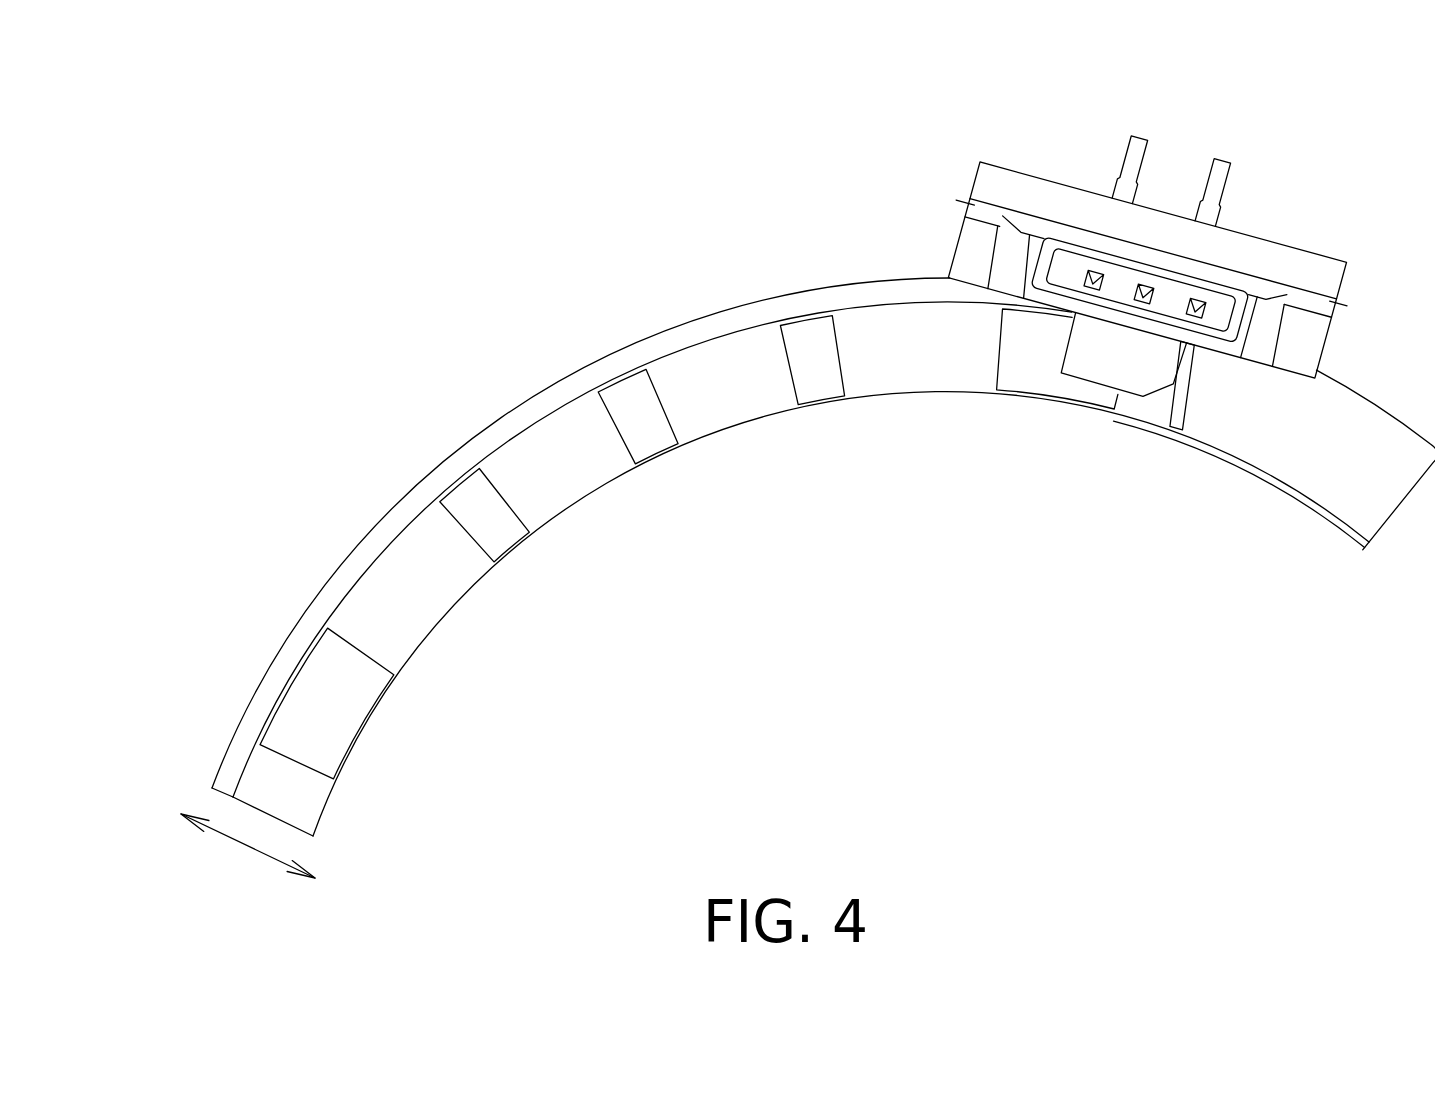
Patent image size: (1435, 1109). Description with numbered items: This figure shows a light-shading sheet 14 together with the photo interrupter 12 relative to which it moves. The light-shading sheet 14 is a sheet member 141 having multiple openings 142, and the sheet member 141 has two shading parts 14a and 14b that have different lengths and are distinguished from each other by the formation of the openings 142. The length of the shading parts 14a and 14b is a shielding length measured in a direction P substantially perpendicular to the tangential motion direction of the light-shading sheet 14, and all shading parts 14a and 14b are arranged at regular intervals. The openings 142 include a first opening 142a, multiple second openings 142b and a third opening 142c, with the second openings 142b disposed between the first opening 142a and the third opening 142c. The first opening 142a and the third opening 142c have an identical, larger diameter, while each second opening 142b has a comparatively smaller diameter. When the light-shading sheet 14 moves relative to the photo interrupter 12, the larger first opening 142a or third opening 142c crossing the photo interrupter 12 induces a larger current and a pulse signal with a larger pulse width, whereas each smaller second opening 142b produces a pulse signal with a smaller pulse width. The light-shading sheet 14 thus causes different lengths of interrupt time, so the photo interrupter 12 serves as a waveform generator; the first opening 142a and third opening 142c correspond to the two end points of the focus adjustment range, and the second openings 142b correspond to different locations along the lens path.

The photo interrupter 12 is at (1238, 220).
The light-shading sheet 14 is at (768, 520).
The shading part 14a is at (388, 590).
The shading part 14b is at (275, 683).
The sheet member 141 is at (723, 382).
The openings 142 is at (689, 520).
The first opening 142a is at (1046, 414).
The second openings 142b is at (463, 495).
The third opening 142c is at (340, 720).
The direction P is at (248, 853).